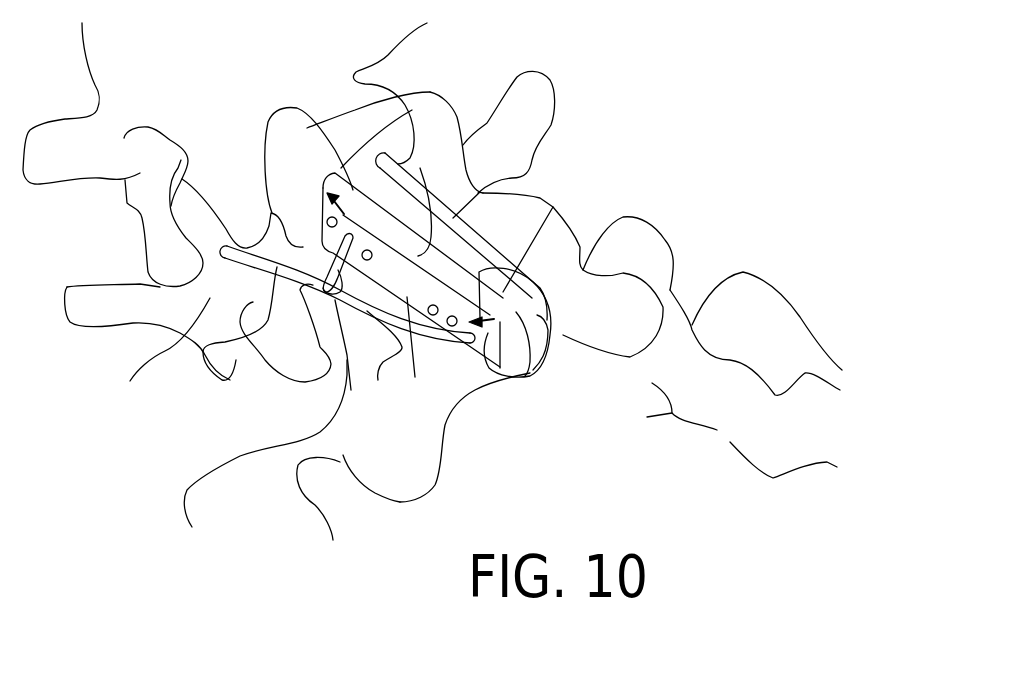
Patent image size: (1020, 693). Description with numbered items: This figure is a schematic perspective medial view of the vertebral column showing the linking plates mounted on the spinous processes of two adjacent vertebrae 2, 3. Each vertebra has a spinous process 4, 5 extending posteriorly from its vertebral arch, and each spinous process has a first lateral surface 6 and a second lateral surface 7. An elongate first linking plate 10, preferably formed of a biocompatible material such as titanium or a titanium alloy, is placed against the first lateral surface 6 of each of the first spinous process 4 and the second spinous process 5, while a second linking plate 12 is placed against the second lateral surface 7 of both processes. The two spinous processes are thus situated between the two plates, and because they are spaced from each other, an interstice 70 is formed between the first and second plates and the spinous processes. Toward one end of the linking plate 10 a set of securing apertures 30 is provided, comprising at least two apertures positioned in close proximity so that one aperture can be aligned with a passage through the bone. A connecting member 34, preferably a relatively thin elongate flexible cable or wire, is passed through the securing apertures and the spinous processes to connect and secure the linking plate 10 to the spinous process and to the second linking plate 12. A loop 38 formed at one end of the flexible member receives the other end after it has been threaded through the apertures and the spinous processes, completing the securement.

The vertebra 2 is at (155, 347).
The vertebra 3 is at (380, 443).
The first spinous process 4 is at (430, 92).
The second spinous process 5 is at (553, 207).
The first lateral surface 6 is at (342, 168).
The second lateral surface 7 is at (263, 135).
The linking plate 10 is at (532, 157).
The second linking plate 12 is at (415, 377).
The set of securing apertures 30 is at (285, 190).
The connecting member 34 is at (206, 368).
The loop 38 is at (262, 447).
The interstice 70 is at (453, 262).